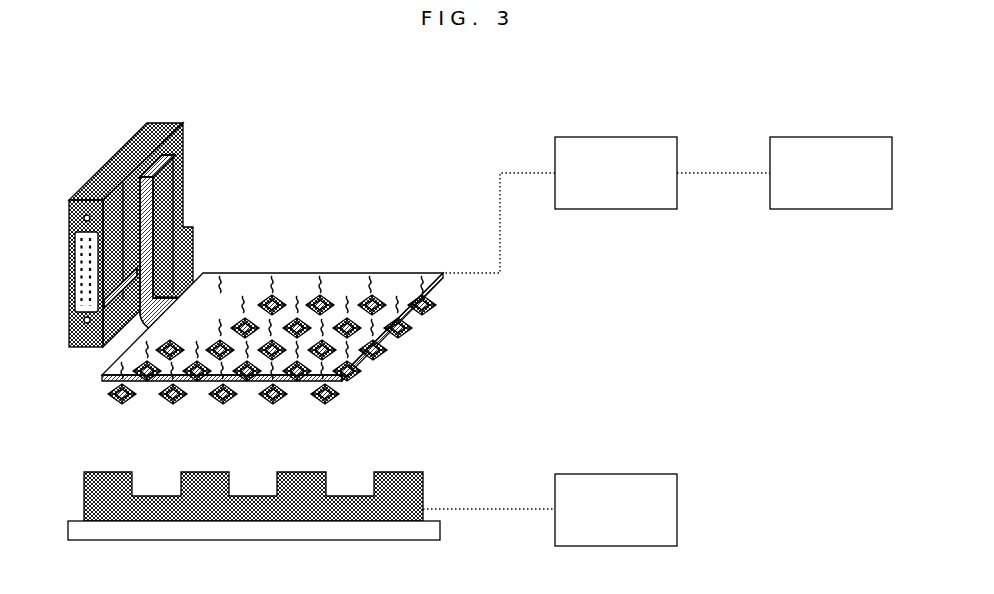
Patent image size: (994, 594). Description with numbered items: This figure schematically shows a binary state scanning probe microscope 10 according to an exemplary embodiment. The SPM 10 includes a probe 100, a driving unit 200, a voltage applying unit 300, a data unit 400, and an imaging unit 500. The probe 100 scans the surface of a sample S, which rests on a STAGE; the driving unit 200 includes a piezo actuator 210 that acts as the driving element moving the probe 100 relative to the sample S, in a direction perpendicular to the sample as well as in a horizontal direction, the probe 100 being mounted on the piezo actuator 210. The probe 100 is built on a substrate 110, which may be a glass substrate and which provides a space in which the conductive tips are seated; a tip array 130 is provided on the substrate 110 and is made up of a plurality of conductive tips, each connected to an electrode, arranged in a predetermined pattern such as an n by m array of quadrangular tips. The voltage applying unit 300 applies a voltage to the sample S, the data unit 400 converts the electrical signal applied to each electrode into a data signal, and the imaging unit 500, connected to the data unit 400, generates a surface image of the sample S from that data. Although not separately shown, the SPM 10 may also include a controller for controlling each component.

The scanning probe microscope 10 is at (511, 73).
The probe 100 is at (321, 295).
The substrate 110 is at (442, 283).
The tip array 130 is at (401, 351).
The driving unit 200 is at (145, 211).
The piezo actuator 210 is at (120, 156).
The voltage applying unit 300 is at (601, 520).
The data unit 400 is at (601, 184).
The imaging unit 500 is at (816, 184).
The sample S is at (436, 488).
The stage STAGE is at (378, 530).